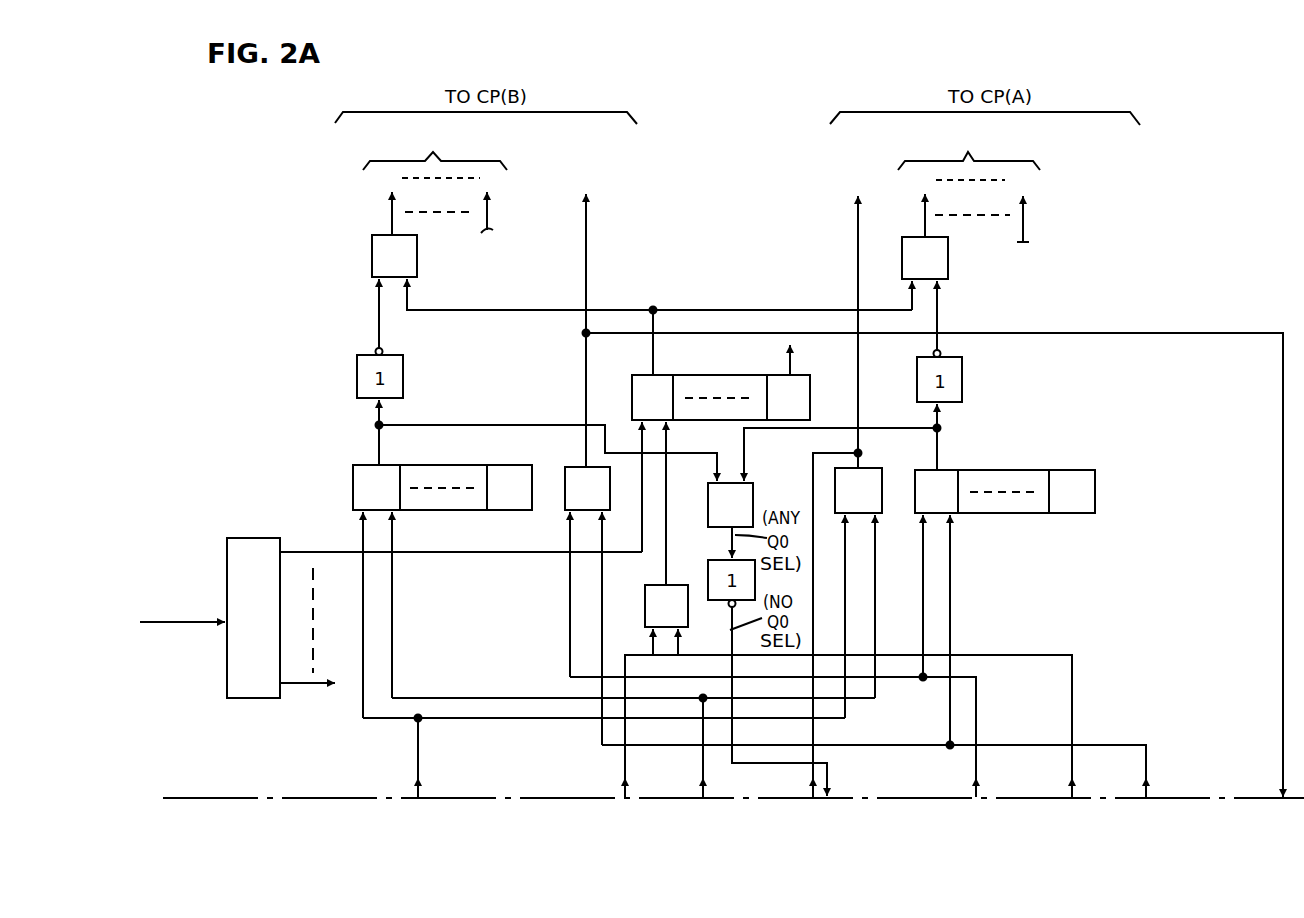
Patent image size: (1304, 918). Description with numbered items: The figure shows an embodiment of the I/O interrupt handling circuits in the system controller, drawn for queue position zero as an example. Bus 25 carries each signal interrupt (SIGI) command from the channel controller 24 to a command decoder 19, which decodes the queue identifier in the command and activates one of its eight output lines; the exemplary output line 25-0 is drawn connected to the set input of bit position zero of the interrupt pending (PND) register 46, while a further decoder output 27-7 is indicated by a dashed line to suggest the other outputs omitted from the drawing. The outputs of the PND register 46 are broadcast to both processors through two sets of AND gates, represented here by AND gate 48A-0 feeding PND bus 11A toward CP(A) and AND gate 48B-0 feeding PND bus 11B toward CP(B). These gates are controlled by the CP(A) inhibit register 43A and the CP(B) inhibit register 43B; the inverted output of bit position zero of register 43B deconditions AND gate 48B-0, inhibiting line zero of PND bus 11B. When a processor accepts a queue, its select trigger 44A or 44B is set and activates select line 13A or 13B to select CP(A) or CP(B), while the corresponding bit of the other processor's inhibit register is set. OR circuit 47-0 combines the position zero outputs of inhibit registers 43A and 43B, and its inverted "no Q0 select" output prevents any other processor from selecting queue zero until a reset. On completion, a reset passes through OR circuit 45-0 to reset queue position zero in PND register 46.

The PND bus 11B is at (435, 182).
The PND bus 11A is at (969, 185).
The select line 13B is at (587, 254).
The select line 13A is at (856, 243).
The AND gate 48B-0 is at (372, 258).
The AND gate 48A-0 is at (948, 270).
The PND register 46 is at (775, 362).
The CP(B) inhibit register 43B is at (557, 456).
The CP(A) inhibit register 43A is at (1122, 458).
The trigger 44B is at (565, 500).
The trigger 44A is at (883, 480).
The OR circuit 47-0 is at (708, 505).
The OR circuit 45-0 is at (678, 583).
The command decoder 19 is at (258, 538).
The bus 25 is at (198, 618).
The channel controller 24 is at (170, 647).
The output line 25-0 is at (447, 553).
The decoder output line 27-7 is at (313, 683).